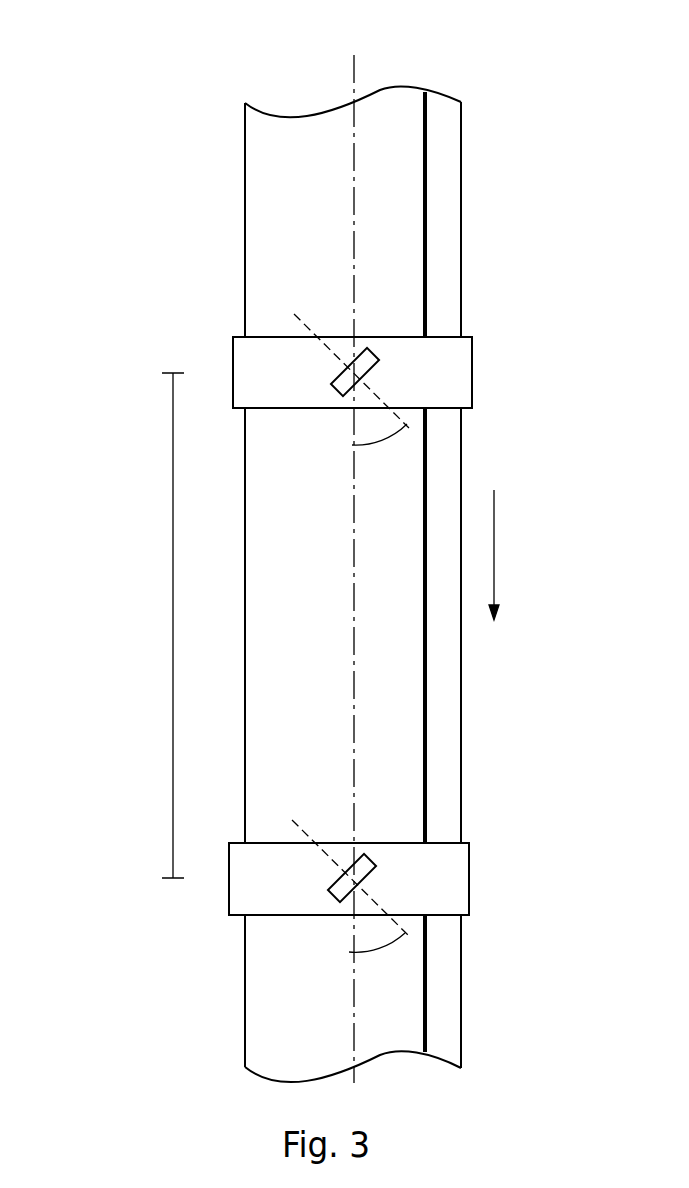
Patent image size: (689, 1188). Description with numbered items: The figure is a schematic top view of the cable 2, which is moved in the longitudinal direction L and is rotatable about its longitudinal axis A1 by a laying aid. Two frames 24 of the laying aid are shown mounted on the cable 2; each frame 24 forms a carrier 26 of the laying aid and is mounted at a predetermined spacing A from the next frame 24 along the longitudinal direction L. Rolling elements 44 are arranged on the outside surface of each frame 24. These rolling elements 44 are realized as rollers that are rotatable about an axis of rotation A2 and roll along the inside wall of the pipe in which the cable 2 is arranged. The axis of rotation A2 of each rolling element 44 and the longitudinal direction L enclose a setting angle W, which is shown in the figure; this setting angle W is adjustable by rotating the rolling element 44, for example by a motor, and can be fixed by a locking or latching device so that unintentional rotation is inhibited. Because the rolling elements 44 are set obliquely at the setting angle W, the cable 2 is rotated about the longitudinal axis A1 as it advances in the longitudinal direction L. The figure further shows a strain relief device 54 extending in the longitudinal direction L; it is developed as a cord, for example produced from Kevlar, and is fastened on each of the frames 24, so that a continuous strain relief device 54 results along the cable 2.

The cable 2 is at (461, 142).
The strain relief device 54 is at (427, 253).
The longitudinal axis A1 is at (354, 55).
The frame 24 is at (258, 645).
The carrier 26 is at (229, 885).
The rolling elements 44 is at (330, 890).
The axis of rotation A2 is at (380, 396).
The setting angle W is at (372, 447).
The longitudinal direction L is at (494, 548).
The spacing A is at (173, 532).